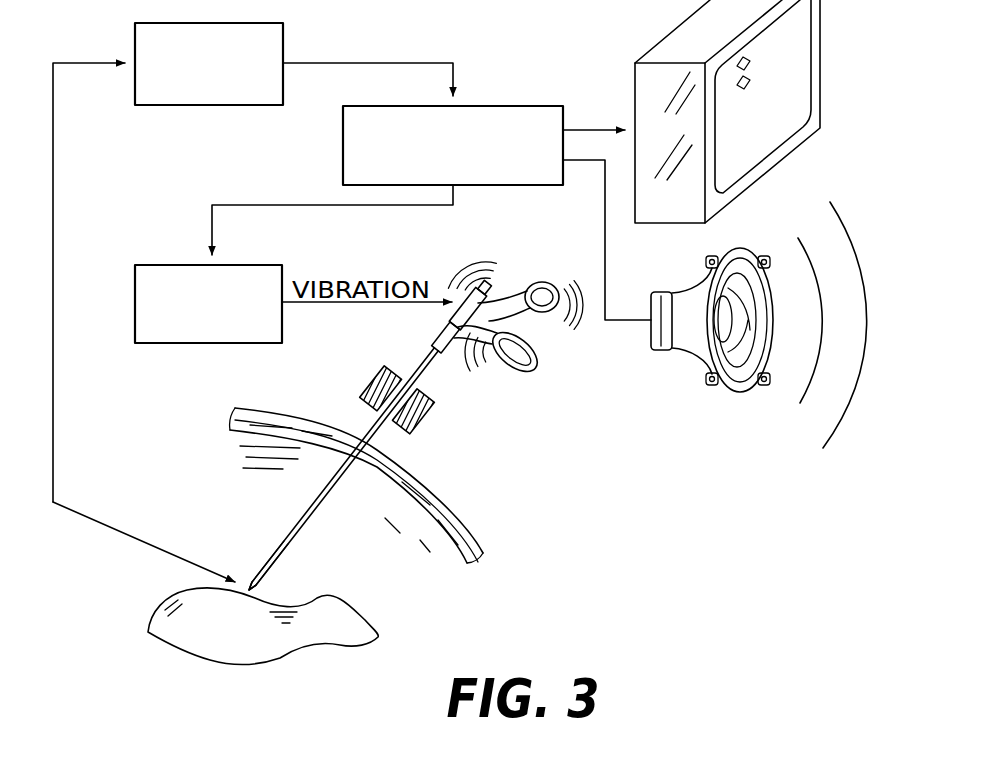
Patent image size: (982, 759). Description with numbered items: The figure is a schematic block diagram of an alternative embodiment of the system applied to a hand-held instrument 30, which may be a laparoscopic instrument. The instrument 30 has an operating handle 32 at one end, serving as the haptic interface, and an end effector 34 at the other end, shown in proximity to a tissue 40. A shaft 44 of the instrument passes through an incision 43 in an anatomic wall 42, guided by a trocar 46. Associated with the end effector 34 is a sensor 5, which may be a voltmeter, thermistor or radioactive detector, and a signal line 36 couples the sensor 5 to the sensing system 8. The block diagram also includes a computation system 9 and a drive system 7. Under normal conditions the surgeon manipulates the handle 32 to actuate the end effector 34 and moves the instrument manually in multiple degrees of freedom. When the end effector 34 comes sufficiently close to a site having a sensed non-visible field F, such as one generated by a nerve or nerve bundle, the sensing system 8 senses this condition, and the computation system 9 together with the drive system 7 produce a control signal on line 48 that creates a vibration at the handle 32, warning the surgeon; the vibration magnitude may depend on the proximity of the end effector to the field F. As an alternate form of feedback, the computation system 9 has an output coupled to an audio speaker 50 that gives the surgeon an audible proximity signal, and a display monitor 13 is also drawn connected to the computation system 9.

The sensor 5 is at (243, 576).
The drive system 7 is at (196, 344).
The sensing system 8 is at (285, 26).
The computation system 9 is at (524, 106).
The display monitor 13 is at (797, 65).
The instrument 30 is at (418, 350).
The operating handle 32 is at (557, 346).
The end effector 34 is at (278, 590).
The signal line 36 is at (90, 510).
The tissue 40 is at (372, 612).
The anatomic wall 42 is at (432, 492).
The incision 43 is at (373, 440).
The shaft 44 is at (357, 415).
The trocar 46 is at (428, 404).
The line 48 is at (442, 300).
The audio speaker 50 is at (690, 378).
The non-visible field F is at (211, 605).